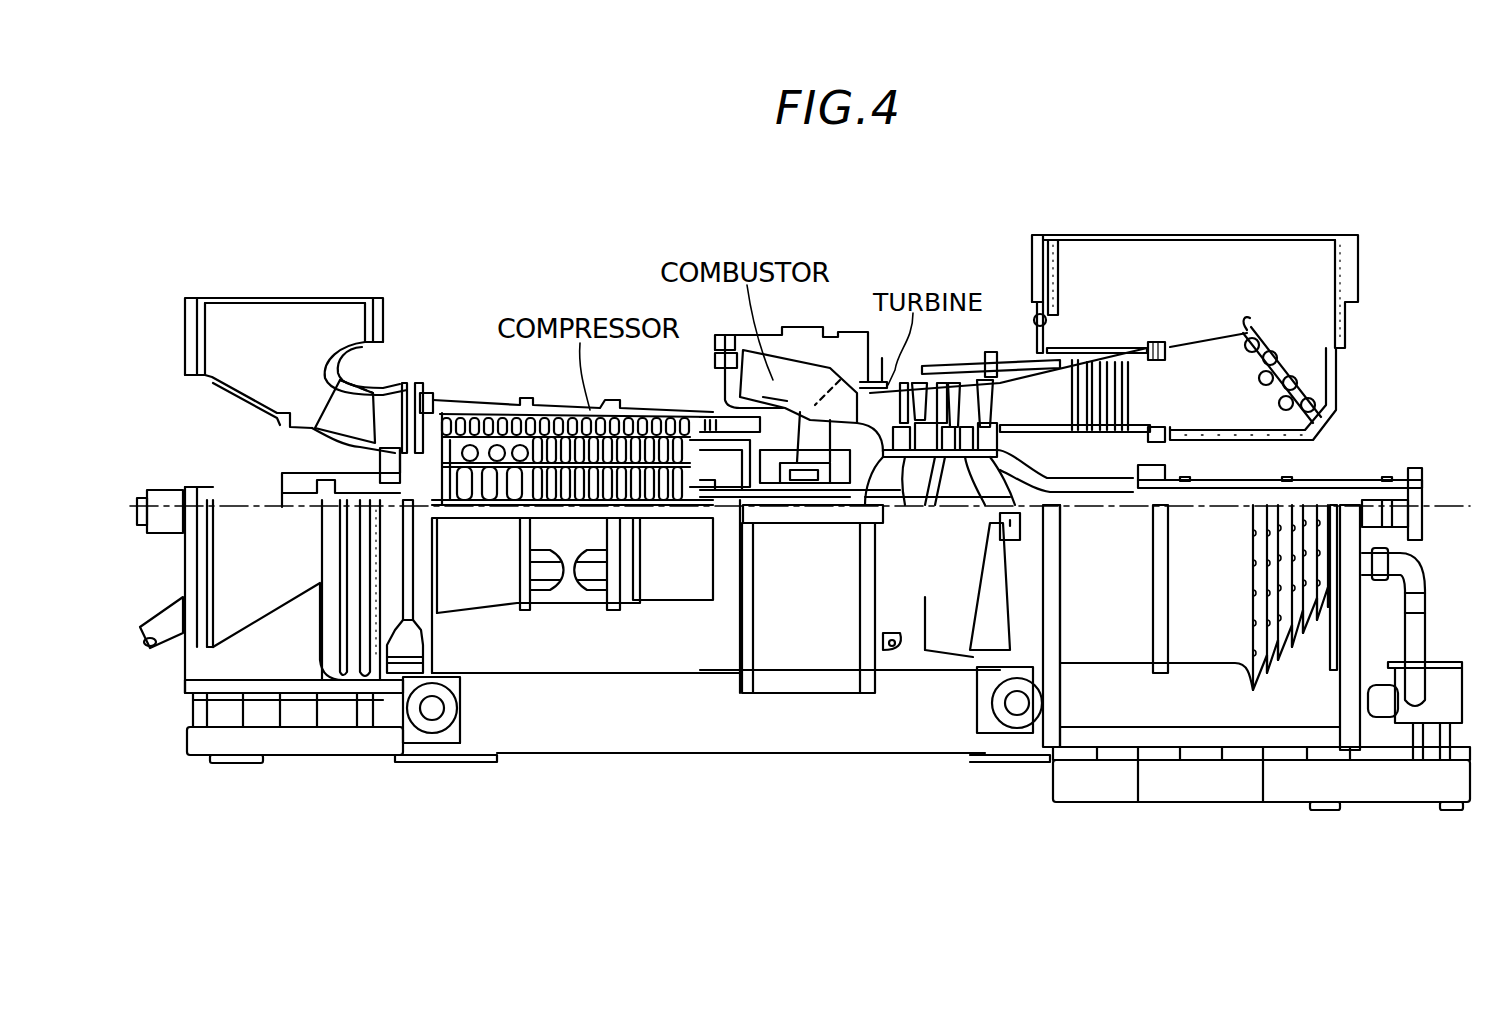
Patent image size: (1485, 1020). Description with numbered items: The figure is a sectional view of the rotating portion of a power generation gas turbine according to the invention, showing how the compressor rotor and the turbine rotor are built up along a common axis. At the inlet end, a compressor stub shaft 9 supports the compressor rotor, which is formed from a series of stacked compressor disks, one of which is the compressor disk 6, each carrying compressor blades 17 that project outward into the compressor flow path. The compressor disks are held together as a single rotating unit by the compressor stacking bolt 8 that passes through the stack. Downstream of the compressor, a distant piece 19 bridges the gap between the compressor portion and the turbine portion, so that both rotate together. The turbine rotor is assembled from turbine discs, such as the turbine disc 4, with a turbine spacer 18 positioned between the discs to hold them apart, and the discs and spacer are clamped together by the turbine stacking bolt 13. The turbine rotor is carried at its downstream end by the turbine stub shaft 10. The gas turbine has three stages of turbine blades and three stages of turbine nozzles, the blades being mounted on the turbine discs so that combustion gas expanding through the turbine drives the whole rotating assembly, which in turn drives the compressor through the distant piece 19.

The turbine disc 4 is at (1043, 503).
The compressor disk 6 is at (513, 517).
The compressor stacking bolt 8 is at (695, 507).
The compressor stub shaft 9 is at (436, 533).
The turbine stub shaft 10 is at (1037, 470).
The turbine stacking bolt 13 is at (920, 500).
The compressor blade 17 is at (435, 388).
The turbine spacer 18 is at (957, 510).
The distant piece 19 is at (773, 490).